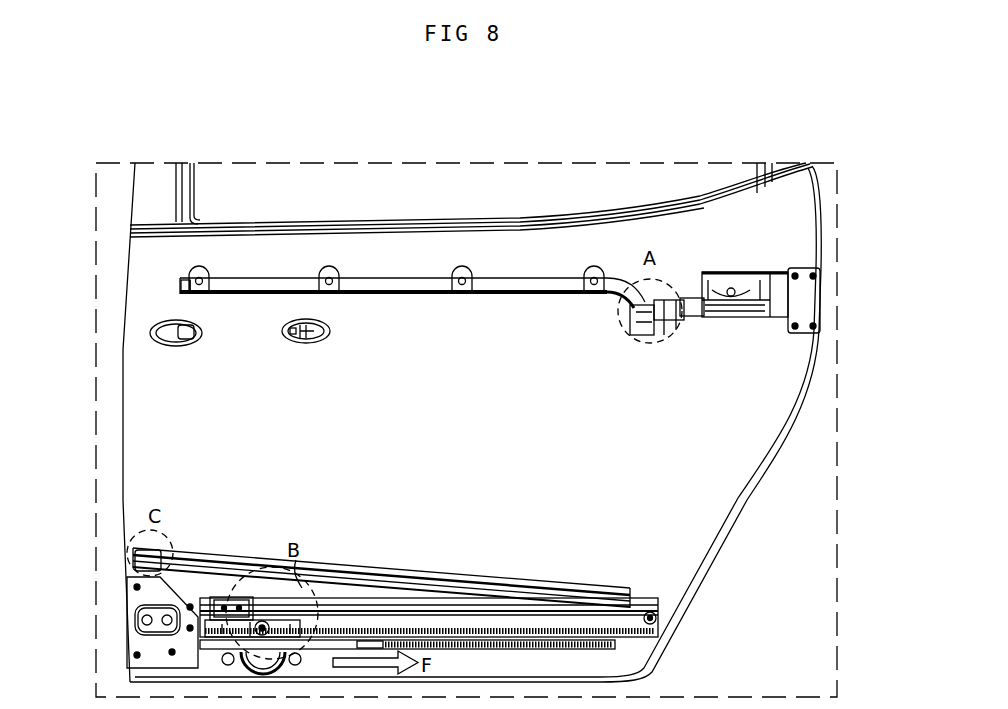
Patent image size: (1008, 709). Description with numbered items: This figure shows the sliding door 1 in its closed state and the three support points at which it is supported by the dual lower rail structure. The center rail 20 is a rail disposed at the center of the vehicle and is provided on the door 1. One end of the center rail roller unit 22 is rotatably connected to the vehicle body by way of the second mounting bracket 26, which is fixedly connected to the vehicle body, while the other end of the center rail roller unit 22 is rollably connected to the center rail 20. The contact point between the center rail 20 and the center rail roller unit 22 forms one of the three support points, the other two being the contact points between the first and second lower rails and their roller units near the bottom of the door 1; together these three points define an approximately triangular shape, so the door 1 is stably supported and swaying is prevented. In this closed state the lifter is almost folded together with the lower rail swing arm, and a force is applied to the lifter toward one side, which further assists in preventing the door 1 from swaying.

The sliding door 1 is at (157, 450).
The center rail 20 is at (380, 283).
The center rail roller unit 22 is at (713, 332).
The second mounting bracket 26 is at (800, 300).